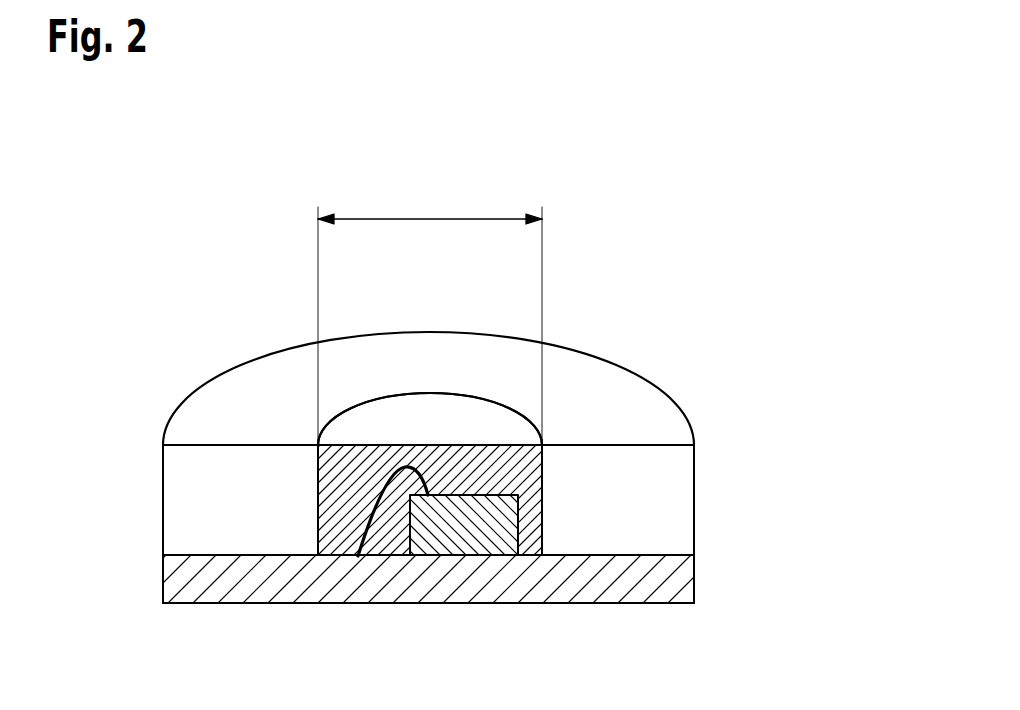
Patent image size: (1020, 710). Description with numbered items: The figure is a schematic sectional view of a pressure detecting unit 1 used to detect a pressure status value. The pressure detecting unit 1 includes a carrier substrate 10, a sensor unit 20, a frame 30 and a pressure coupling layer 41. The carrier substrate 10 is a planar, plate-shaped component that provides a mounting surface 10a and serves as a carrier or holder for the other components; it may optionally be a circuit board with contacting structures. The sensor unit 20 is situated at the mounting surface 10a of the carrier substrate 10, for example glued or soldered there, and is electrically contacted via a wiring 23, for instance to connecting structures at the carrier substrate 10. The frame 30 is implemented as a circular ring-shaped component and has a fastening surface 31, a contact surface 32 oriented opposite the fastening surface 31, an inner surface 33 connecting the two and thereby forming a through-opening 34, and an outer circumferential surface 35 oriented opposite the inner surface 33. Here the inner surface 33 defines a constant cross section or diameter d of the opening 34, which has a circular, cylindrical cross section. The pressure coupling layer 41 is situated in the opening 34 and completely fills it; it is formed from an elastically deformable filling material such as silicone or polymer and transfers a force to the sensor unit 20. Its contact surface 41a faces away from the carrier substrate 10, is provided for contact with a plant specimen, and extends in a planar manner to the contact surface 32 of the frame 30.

The pressure detecting unit 1 is at (147, 257).
The carrier substrate 10 is at (680, 585).
The mounting surface 10a is at (224, 537).
The sensor unit 20 is at (498, 545).
The wiring 23 is at (377, 532).
The frame 30 is at (675, 532).
The fastening surface 31 is at (258, 556).
The contact surface 32 is at (262, 423).
The inner surface 33 is at (340, 478).
The opening 34 is at (426, 393).
The outer circumferential surface 35 is at (696, 477).
The pressure coupling layer 41 is at (543, 418).
The contact surface of pressure coupling layer 41a is at (474, 440).
The diameter of opening d is at (430, 218).